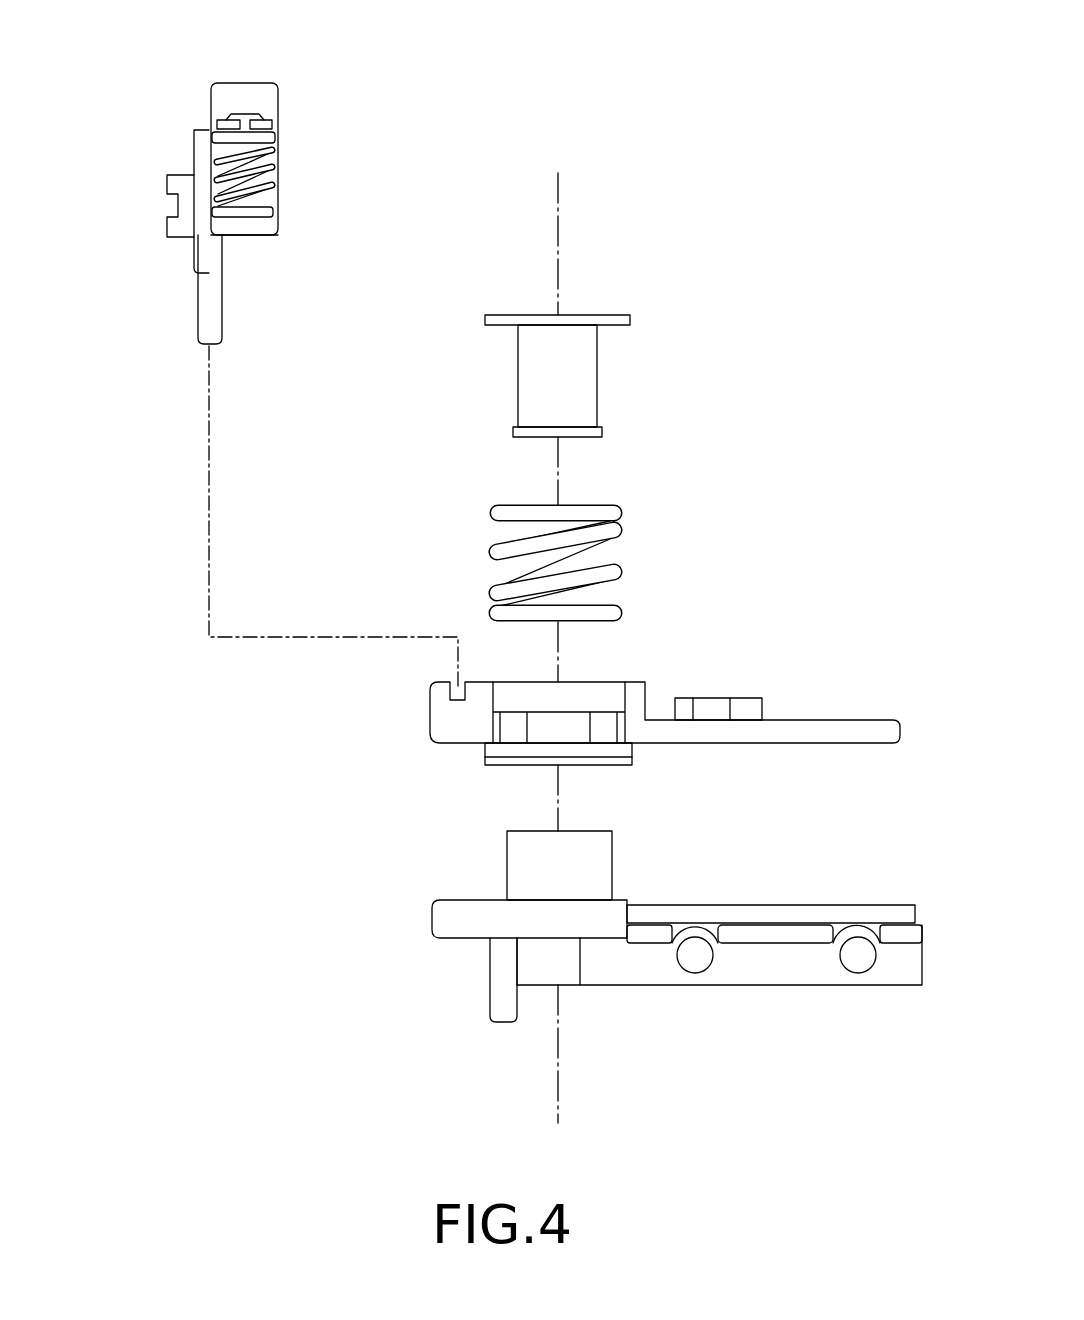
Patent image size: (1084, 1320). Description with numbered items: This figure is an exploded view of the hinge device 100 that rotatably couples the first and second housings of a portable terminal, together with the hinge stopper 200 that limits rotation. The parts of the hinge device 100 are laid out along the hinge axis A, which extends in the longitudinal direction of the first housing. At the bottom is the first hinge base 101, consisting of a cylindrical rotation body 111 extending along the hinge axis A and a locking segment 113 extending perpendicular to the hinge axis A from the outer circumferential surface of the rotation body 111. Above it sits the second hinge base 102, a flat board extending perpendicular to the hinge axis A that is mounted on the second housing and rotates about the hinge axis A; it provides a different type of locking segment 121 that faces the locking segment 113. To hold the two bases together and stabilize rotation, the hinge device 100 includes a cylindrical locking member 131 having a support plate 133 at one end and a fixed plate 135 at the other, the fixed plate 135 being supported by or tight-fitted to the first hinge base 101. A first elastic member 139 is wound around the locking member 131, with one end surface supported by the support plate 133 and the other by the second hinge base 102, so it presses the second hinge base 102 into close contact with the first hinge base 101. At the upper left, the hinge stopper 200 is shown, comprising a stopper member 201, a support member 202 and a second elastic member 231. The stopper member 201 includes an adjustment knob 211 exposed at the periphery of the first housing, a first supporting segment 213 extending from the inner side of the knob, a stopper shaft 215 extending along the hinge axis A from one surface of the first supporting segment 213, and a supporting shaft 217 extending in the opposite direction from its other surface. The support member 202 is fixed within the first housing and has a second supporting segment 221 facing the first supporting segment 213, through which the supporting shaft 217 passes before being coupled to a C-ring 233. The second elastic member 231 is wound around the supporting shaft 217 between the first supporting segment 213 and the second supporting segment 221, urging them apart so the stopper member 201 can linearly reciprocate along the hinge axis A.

The hinge device 100 is at (730, 76).
The hinge axis A is at (558, 230).
The hinge stopper 200 is at (289, 70).
The support member 202 is at (243, 93).
The C-ring 233 is at (274, 127).
The second supporting segment 221 is at (272, 138).
The second elastic member 231 is at (268, 176).
The supporting shaft 217 is at (277, 203).
The first supporting segment 213 is at (250, 229).
The stopper member 201 is at (181, 260).
The adjustment knob 211 is at (178, 203).
The stopper shaft 215 is at (205, 317).
The locking member 131 is at (644, 378).
The support plate 133 is at (630, 321).
The fixed plate 135 is at (593, 437).
The first elastic member 139 is at (646, 553).
The second hinge base 102 is at (414, 715).
The locking segment 121 is at (832, 728).
The first hinge base 101 is at (470, 982).
The rotation body 111 is at (525, 862).
The locking segment 113 is at (779, 932).